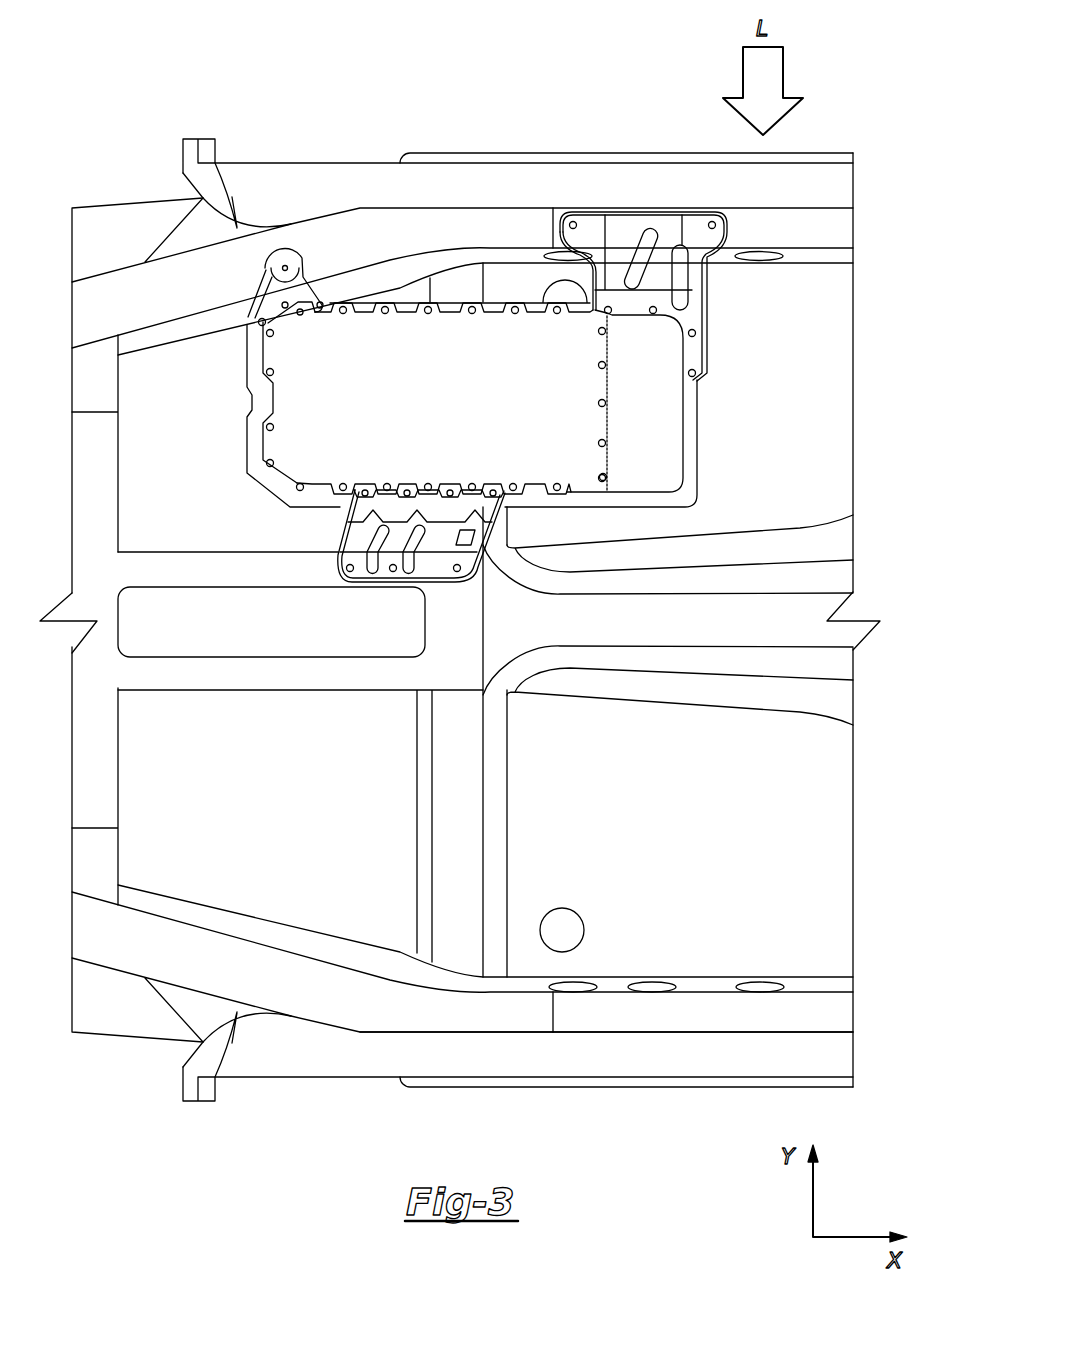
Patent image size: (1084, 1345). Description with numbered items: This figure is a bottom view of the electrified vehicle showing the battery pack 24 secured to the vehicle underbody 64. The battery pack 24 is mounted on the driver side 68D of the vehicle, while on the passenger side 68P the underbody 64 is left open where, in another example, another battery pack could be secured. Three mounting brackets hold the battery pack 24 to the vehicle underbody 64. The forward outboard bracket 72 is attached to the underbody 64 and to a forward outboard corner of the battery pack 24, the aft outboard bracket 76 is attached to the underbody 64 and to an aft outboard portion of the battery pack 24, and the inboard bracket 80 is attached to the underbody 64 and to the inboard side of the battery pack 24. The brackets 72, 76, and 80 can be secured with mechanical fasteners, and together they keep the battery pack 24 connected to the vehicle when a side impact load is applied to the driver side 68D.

The battery pack 24 is at (673, 441).
The vehicle underbody 64 is at (467, 1018).
The driver side 68D is at (875, 153).
The passenger side 68P is at (875, 633).
The forward outboard bracket 72 is at (695, 230).
The aft outboard bracket 76 is at (287, 266).
The inboard bracket 80 is at (462, 569).